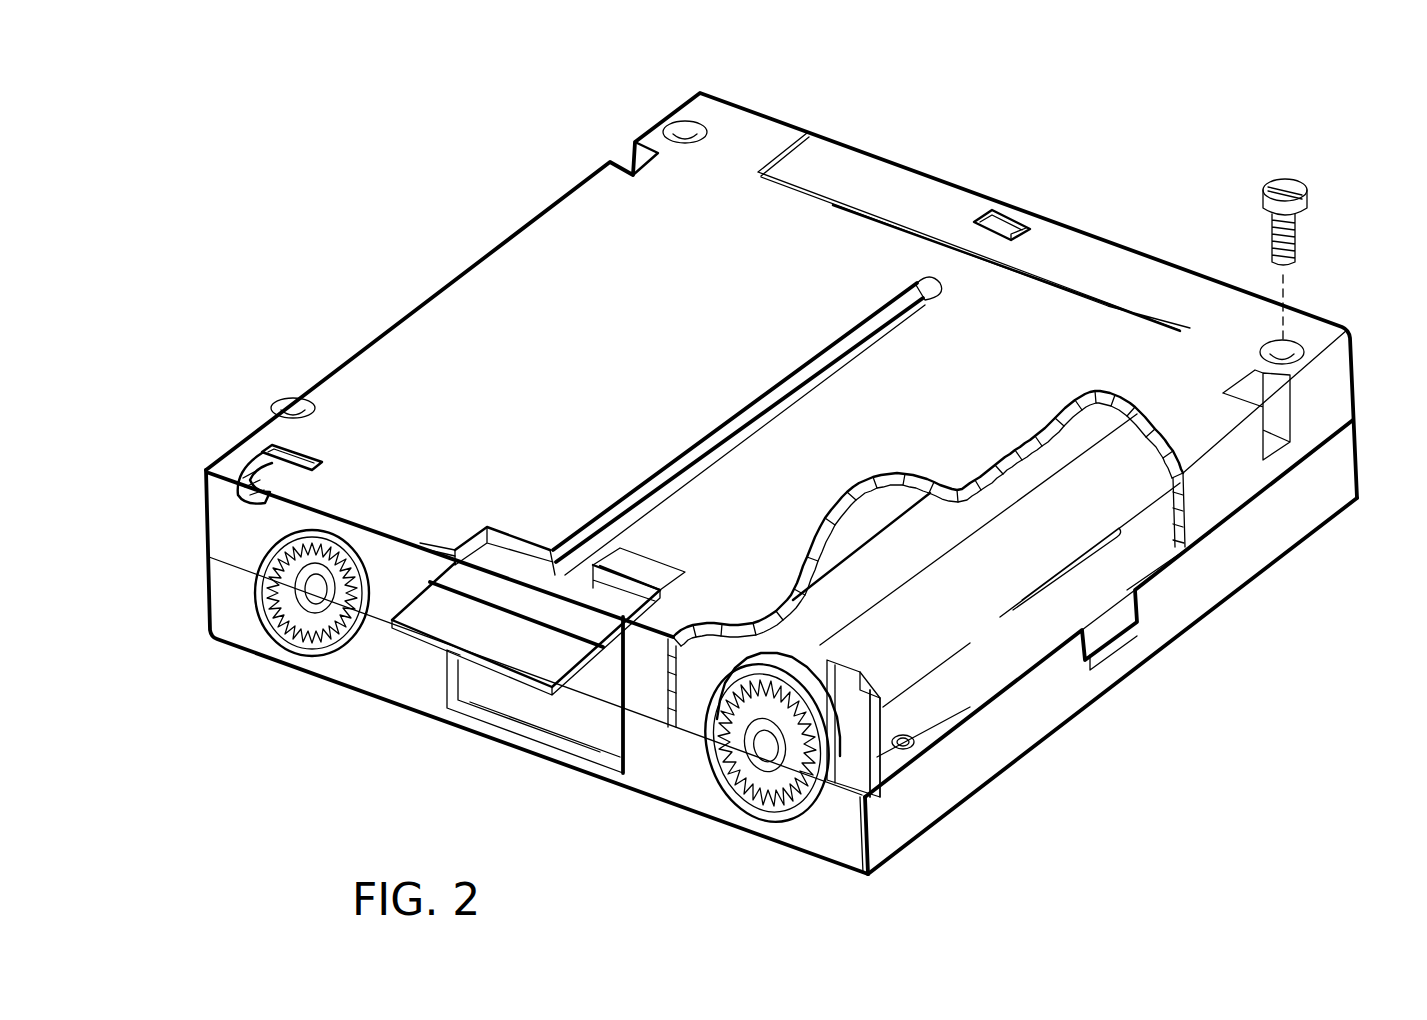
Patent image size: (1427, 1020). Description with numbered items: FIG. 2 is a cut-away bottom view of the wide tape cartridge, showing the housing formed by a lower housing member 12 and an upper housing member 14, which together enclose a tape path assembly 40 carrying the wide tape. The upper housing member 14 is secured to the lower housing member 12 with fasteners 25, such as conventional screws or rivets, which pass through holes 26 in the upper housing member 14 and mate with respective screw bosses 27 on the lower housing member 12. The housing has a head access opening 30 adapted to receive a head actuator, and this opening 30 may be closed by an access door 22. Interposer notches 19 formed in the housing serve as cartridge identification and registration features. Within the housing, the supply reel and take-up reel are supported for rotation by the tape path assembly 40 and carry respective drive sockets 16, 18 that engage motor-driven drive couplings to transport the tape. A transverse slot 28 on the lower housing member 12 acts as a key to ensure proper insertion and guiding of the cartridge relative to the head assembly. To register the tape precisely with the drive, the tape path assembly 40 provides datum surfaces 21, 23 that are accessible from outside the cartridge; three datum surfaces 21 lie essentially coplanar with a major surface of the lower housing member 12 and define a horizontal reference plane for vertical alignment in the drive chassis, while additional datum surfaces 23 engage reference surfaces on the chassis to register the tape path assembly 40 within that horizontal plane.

The lower housing member 12 is at (427, 347).
The upper housing member 14 is at (890, 845).
The drive socket 16 is at (730, 790).
The drive socket 18 is at (296, 645).
The interposer notch 19 is at (1278, 400).
The datum surface 21 is at (845, 660).
The access door 22 is at (418, 668).
The datum surface 23 is at (885, 735).
The fastener 25 is at (1312, 200).
The hole 26 is at (297, 430).
The screw boss 27 is at (887, 745).
The transverse slot 28 is at (717, 447).
The head access opening 30 is at (583, 700).
The tape path assembly 40 is at (880, 772).